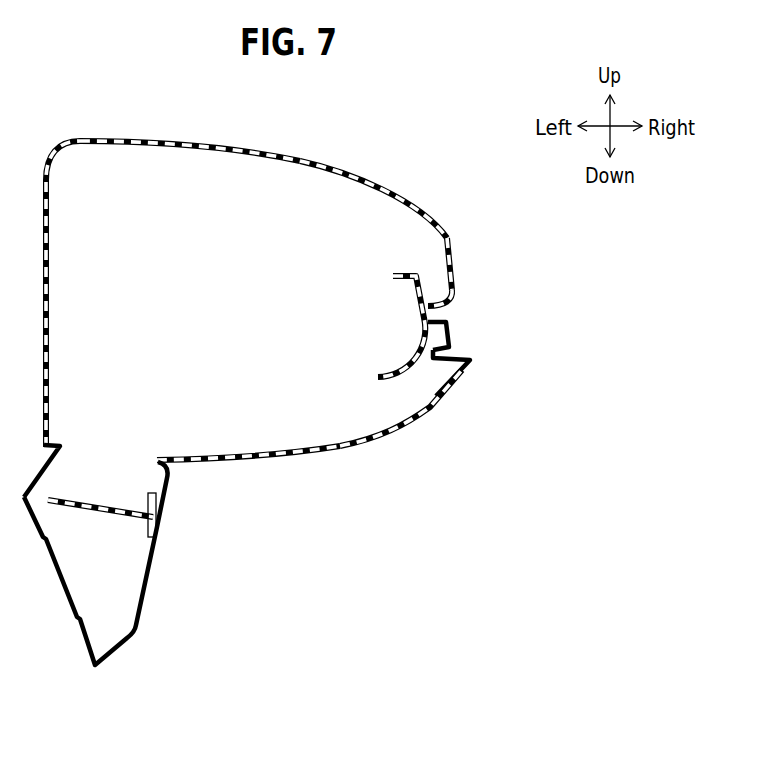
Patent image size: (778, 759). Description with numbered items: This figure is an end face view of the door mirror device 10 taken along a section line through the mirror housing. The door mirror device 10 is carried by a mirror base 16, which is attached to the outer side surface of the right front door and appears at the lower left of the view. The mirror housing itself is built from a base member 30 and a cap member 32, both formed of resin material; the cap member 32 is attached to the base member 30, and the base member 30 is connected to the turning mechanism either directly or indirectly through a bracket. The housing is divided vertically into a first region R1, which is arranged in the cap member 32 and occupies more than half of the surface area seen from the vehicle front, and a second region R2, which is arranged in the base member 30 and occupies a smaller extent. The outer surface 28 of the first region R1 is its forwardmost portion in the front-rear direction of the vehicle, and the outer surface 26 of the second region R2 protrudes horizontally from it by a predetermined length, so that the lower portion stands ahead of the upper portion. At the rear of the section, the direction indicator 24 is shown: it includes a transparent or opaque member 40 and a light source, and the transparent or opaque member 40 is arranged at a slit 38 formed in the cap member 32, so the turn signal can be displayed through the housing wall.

The door mirror device 10 is at (283, 397).
The mirror base 16 is at (123, 652).
The direction indicator 24 is at (459, 310).
The outer surface of the second region 26 is at (472, 365).
The outer surface of the first region 28 is at (447, 229).
The base member 30 is at (347, 453).
The cap member 32 is at (273, 151).
The slit 38 is at (442, 318).
The transparent or opaque member 40 is at (417, 315).
The first region R1 is at (388, 182).
The second region R2 is at (414, 435).